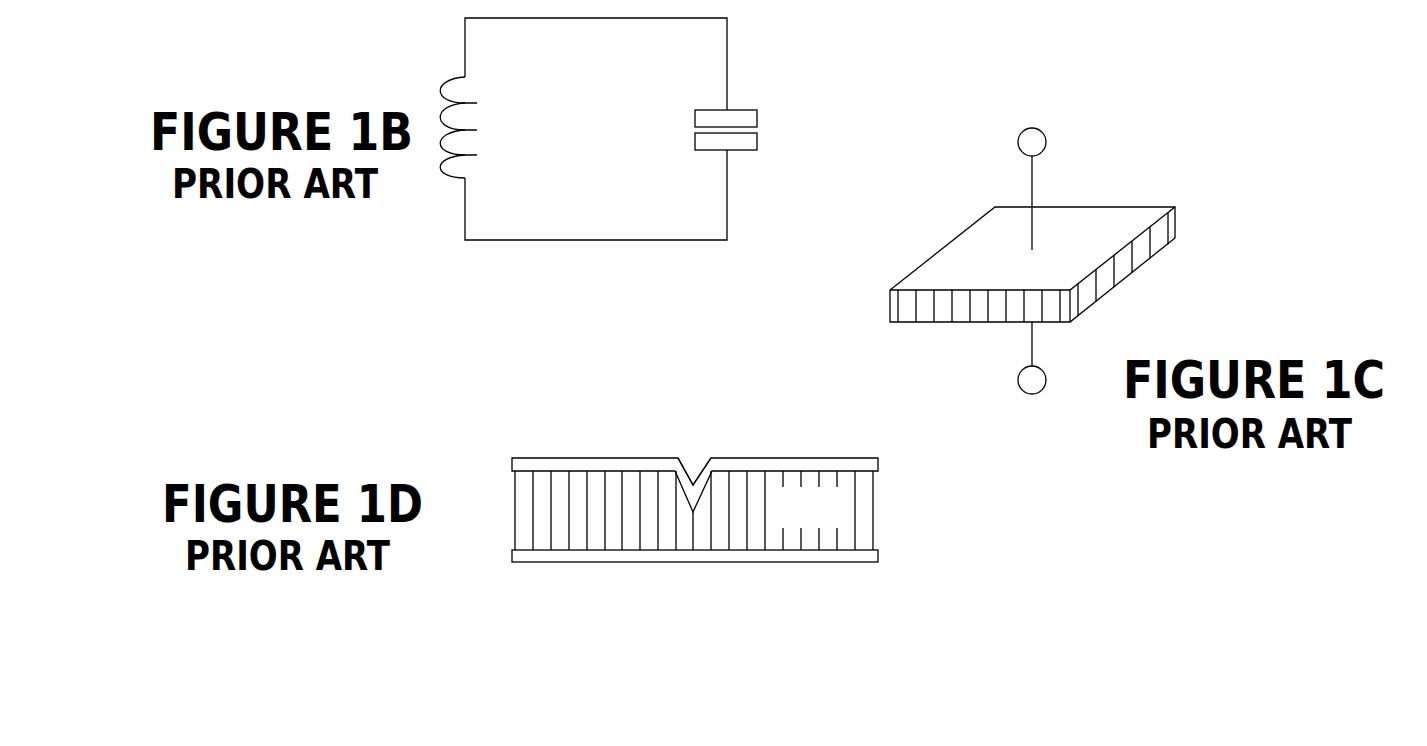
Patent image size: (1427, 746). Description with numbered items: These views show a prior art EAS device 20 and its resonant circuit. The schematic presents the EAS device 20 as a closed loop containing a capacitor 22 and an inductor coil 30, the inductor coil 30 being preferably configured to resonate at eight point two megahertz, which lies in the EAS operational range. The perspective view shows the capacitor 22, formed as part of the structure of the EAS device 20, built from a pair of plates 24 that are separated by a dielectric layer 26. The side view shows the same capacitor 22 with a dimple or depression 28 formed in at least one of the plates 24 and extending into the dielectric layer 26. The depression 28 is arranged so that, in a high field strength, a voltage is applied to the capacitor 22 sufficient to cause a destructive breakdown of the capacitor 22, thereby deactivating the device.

In FIG. 1B, the EAS device 20 is at (750, 61).
In FIG. 1B, the capacitor 22 is at (765, 125).
In FIG. 1C, the capacitor 22 is at (1112, 138).
In FIG. 1D, the capacitor 22 is at (690, 415).
In FIG. 1C, the plates 24 is at (1094, 248).
In FIG. 1D, the plates 24 is at (878, 458).
In FIG. 1C, the dielectric layer 26 is at (1158, 228).
In FIG. 1D, the dielectric layer 26 is at (830, 519).
In FIG. 1D, the dimple or depression 28 is at (693, 484).
In FIG. 1B, the inductor coil 30 is at (455, 181).